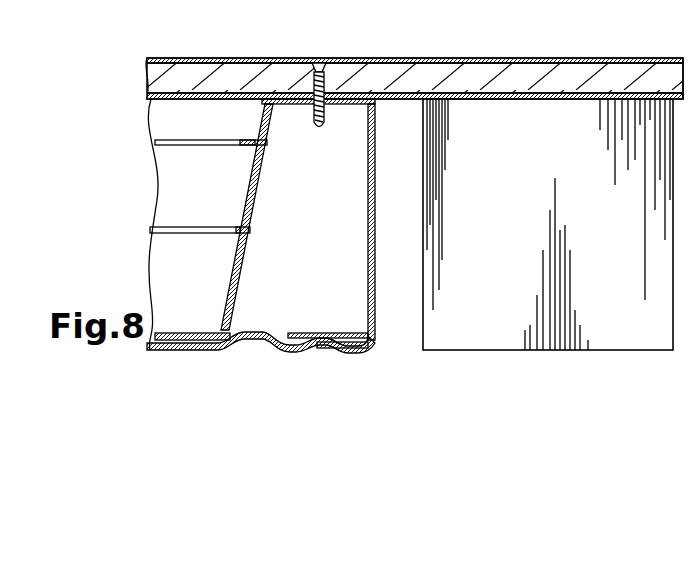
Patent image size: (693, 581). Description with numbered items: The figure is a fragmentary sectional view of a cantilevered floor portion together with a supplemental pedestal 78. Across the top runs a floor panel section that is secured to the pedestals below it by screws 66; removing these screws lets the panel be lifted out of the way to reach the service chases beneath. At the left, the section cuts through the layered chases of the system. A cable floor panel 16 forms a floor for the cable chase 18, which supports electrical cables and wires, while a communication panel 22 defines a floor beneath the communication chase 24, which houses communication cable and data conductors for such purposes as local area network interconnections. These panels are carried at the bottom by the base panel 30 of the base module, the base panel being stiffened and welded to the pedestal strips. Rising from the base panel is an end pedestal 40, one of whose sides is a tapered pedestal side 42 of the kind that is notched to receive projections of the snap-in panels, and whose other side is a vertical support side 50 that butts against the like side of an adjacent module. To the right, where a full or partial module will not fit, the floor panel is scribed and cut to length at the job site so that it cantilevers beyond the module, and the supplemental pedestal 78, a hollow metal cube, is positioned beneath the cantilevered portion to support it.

The cable floor panel 16 is at (0, 220).
The cable chase 18 is at (215, 198).
The communication panel 22 is at (341, 98).
The communication chase 24 is at (200, 128).
The base panel 30 is at (172, 352).
The end pedestal 40 is at (298, 219).
The tapered pedestal side 42 is at (256, 188).
The vertical support side 50 is at (368, 247).
The screw 66 is at (320, 62).
The supplemental pedestal 78 is at (513, 325).